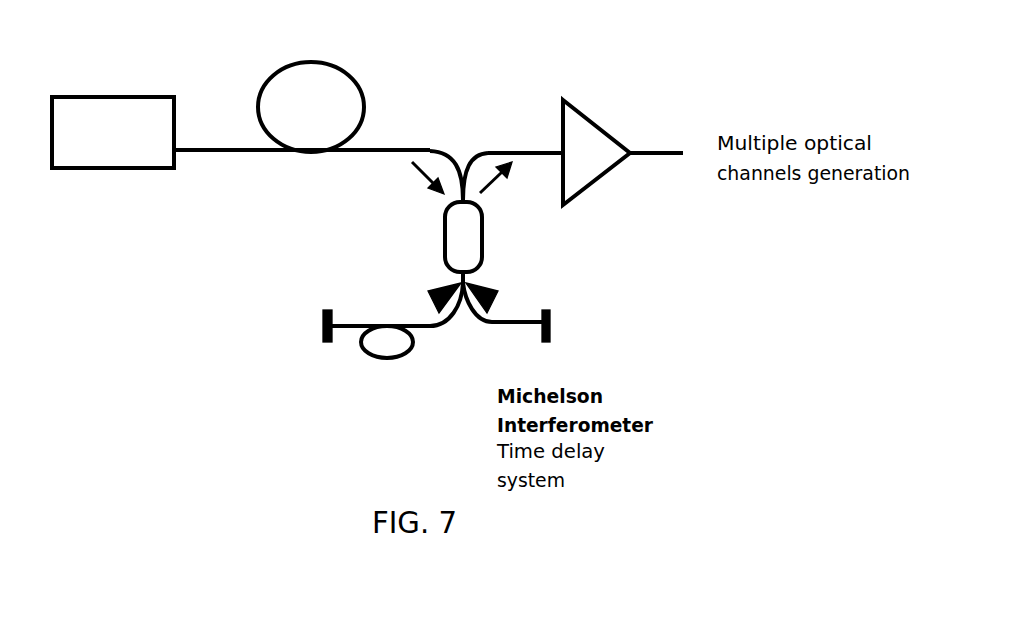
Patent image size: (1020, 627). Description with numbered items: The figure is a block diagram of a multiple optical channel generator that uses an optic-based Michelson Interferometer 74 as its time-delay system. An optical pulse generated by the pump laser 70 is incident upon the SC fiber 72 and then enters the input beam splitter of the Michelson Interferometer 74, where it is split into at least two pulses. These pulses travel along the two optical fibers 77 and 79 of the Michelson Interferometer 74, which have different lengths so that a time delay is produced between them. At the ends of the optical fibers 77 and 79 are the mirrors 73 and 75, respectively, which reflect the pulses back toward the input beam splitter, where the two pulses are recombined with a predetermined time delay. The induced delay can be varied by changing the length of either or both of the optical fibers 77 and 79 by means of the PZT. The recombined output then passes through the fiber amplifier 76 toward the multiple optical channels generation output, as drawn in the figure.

The pump laser 70 is at (114, 97).
The SC fiber 72 is at (258, 92).
The mirror 73 is at (323, 310).
The Michelson Interferometer 74 is at (445, 235).
The mirror 75 is at (553, 323).
The fiber amplifier 76 is at (595, 122).
The optical fiber 77 is at (420, 331).
The optical fiber 79 is at (497, 325).